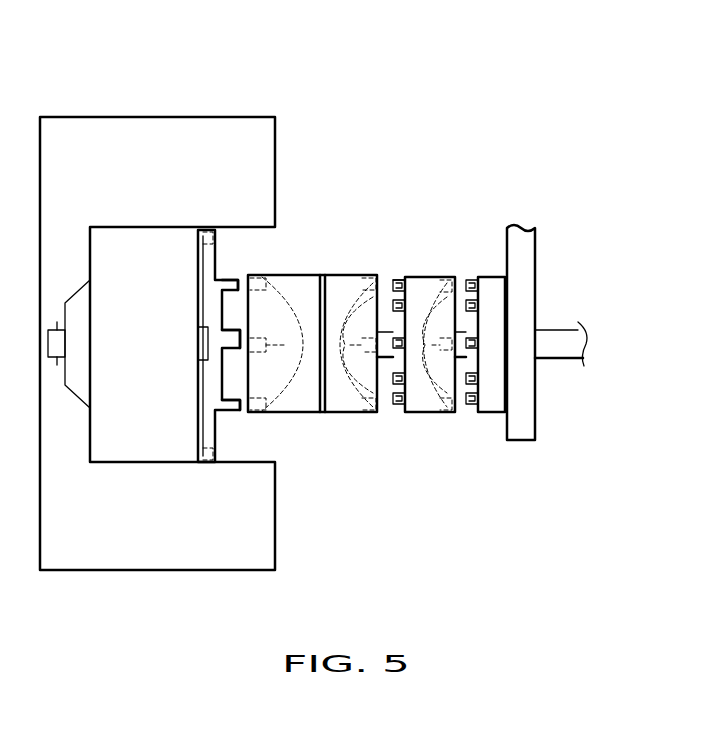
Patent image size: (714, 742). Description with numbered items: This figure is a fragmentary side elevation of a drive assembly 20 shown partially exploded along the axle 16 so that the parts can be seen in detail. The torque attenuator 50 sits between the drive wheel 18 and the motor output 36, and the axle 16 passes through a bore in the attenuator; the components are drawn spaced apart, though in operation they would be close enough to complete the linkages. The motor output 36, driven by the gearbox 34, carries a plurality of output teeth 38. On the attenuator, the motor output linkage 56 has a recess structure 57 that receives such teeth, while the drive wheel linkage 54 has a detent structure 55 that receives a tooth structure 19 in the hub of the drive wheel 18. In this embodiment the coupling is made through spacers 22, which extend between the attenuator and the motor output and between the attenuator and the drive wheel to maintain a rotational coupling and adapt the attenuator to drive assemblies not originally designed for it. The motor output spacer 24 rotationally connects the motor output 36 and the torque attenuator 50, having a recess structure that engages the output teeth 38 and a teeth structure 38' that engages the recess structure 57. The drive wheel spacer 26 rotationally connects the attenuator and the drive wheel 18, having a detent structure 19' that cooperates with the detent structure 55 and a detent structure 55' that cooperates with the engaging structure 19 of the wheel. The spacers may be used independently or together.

The axle 16 is at (553, 362).
The drive wheel 18 is at (123, 104).
The tooth structure 19 is at (172, 342).
The detent structure 19' is at (266, 346).
The drive assembly 20 is at (558, 158).
The spacers 22 is at (236, 258).
The motor output spacer 24 is at (443, 270).
The drive wheel spacer 26 is at (209, 378).
The gearbox 34 is at (541, 277).
The motor output 36 is at (491, 422).
The output teeth 38 is at (477, 344).
The teeth structure 38' is at (413, 343).
The torque attenuator 50 is at (323, 262).
The drive wheel linkage 54 is at (245, 378).
The detent structure 55 is at (283, 344).
The detent structure 55' is at (230, 320).
The motor output linkage 56 is at (388, 281).
The recess structure 57 is at (390, 344).